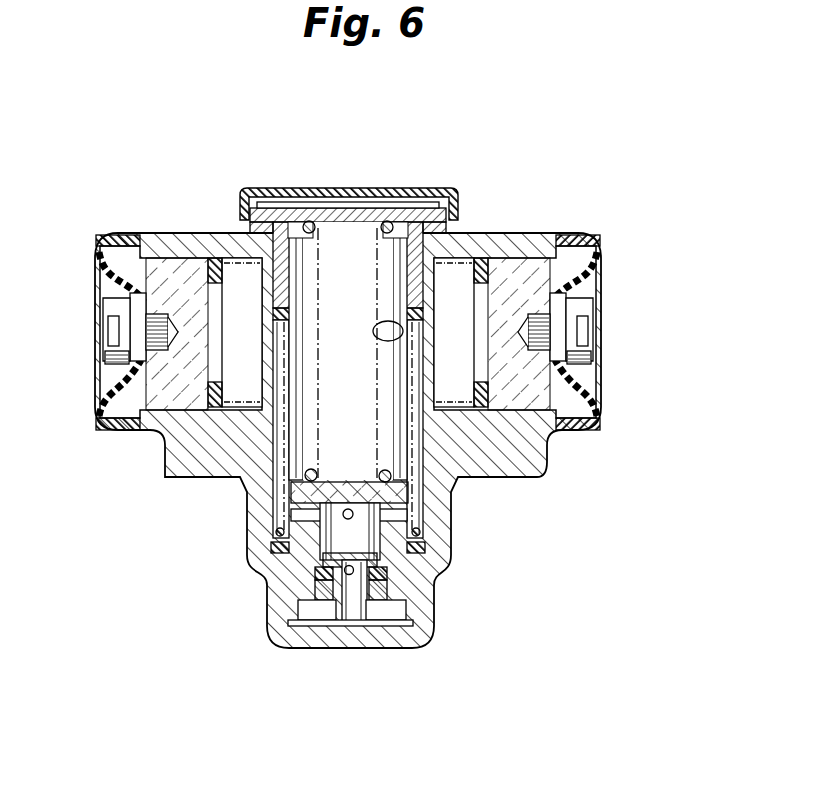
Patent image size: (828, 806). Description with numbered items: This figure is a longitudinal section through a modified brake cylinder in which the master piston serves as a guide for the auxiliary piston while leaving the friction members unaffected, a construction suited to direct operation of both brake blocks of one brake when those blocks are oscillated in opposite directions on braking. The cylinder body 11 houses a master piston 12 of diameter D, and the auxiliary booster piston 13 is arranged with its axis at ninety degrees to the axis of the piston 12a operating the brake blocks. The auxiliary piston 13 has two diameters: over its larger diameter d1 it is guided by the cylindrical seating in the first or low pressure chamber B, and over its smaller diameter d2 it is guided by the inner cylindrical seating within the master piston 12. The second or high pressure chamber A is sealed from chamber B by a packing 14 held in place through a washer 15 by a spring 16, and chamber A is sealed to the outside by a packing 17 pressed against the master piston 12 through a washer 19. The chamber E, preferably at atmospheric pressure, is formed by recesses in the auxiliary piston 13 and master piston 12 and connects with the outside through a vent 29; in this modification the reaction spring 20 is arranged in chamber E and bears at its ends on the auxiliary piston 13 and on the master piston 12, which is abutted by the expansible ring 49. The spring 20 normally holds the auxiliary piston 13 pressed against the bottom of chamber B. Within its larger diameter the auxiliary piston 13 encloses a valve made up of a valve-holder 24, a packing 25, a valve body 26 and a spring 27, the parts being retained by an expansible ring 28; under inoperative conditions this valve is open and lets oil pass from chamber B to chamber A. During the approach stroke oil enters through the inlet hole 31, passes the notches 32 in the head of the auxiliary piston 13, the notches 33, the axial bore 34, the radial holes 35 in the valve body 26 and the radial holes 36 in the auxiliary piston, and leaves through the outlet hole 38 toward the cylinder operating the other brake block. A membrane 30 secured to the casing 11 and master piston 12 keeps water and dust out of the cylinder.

The cylinder body 11 is at (525, 243).
The master piston 12 is at (413, 246).
The piston operating the brake blocks 12a is at (188, 277).
The auxiliary booster piston 13 is at (402, 357).
The packing 14 is at (441, 567).
The washer 15 is at (443, 544).
The spring 16 is at (415, 429).
The packing 17 is at (284, 330).
The washer 19 is at (430, 318).
The coil spring 20 is at (305, 481).
The valve-holder 24 is at (317, 600).
The packing 25 is at (432, 601).
The valve body 26 is at (330, 544).
The spring 27 is at (430, 581).
The expansible ring 28 is at (316, 612).
The vent 29 is at (340, 210).
The membrane 30 is at (290, 186).
The inlet hole 31 is at (358, 625).
The notches 32 is at (292, 620).
The notches 33 is at (345, 600).
The axial bore 34 is at (333, 602).
The radial holes 35 is at (313, 580).
The radial holes 36 is at (305, 516).
The outlet hole 38 is at (380, 334).
The expansible ring 49 is at (260, 203).
The second or high pressure chamber A is at (517, 472).
The first or low pressure chamber B is at (415, 646).
The chamber at atmospheric pressure E is at (348, 351).
The diameter of the master piston D is at (45, 258).
The larger diameter of the auxiliary piston d1 is at (288, 650).
The smaller diameter of the auxiliary piston d2 is at (403, 212).